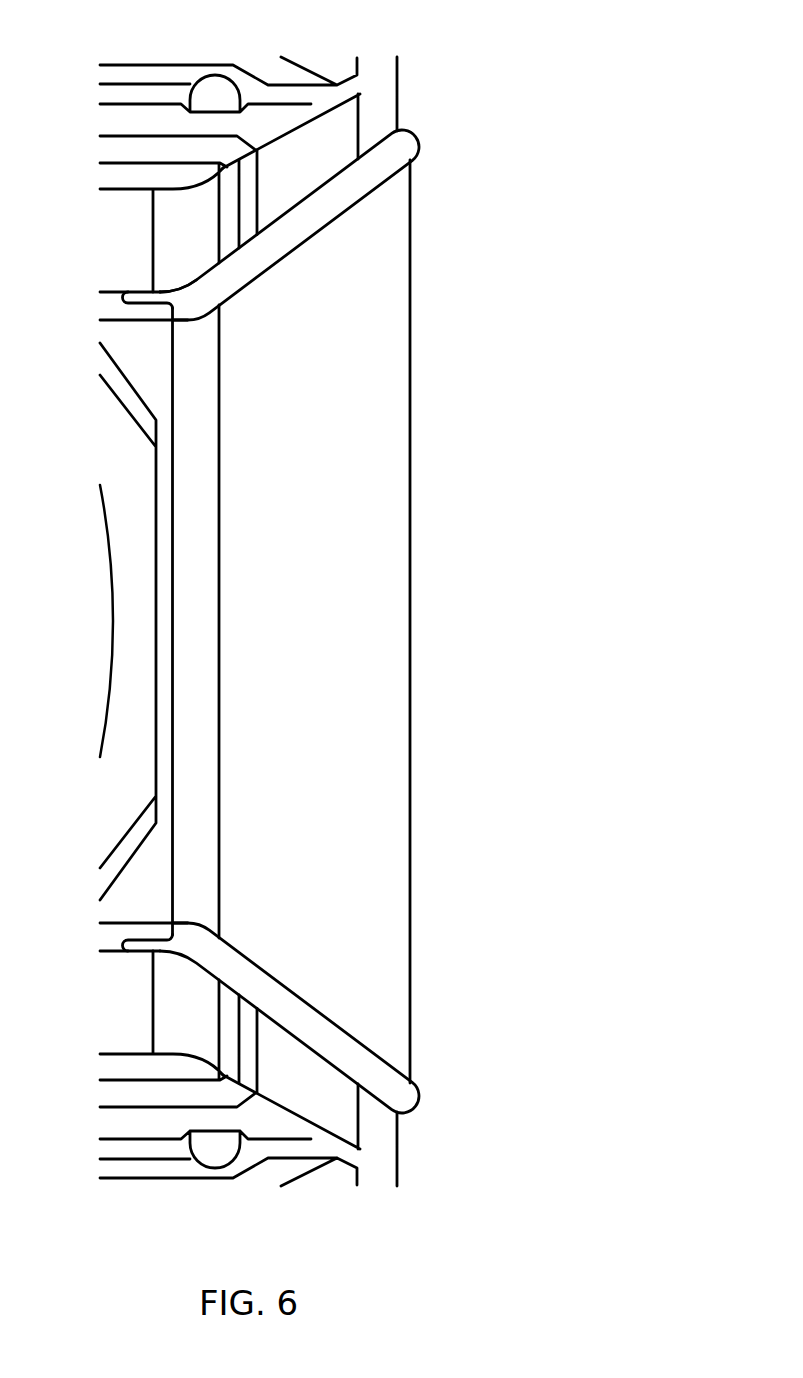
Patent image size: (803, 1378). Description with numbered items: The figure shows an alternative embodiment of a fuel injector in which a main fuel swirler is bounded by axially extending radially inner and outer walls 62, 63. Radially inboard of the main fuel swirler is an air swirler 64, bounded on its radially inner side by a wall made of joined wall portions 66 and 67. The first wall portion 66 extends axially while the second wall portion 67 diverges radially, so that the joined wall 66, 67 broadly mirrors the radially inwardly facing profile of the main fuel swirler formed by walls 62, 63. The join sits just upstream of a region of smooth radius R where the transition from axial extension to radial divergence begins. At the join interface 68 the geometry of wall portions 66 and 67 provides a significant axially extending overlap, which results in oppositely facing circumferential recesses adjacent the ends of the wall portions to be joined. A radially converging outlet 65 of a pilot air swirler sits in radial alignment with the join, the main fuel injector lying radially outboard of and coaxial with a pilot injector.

The radially inner wall 62 is at (160, 150).
The radially outer wall 63 is at (137, 121).
The air swirler 64 is at (330, 148).
The radially converging outlet 65 is at (124, 391).
The first wall portion 66 is at (107, 307).
The second wall portion 67 is at (322, 212).
The join interface 68 is at (165, 321).
The smooth radius R is at (178, 284).